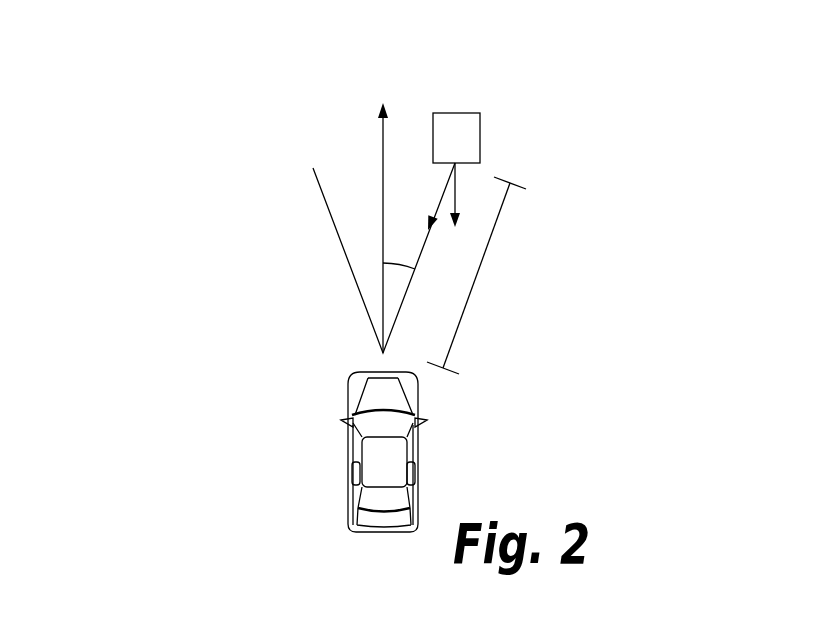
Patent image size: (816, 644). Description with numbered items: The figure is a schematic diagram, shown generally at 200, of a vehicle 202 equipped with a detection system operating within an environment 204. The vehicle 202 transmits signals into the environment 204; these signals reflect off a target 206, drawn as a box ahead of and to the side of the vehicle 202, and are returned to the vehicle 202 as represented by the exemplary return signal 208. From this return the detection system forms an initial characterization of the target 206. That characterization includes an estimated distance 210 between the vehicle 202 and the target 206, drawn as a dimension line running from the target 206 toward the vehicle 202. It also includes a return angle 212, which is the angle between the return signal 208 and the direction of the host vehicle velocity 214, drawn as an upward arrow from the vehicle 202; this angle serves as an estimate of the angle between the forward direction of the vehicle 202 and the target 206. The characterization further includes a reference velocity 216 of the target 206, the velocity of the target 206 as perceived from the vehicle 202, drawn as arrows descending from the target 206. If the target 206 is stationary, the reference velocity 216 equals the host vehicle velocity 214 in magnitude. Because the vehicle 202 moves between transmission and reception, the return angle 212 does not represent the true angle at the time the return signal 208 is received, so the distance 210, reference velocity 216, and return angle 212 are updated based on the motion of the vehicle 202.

The schematic diagram of vehicle with detection system 200 is at (212, 137).
The vehicle 202 is at (348, 465).
The environment 204 is at (543, 132).
The target 206 is at (461, 113).
The return signal 208 is at (415, 186).
The distance (D) 210 is at (462, 320).
The return angle (θ) 212 is at (387, 265).
The host vehicle velocity 214 is at (382, 125).
The reference velocity 216 is at (415, 186).